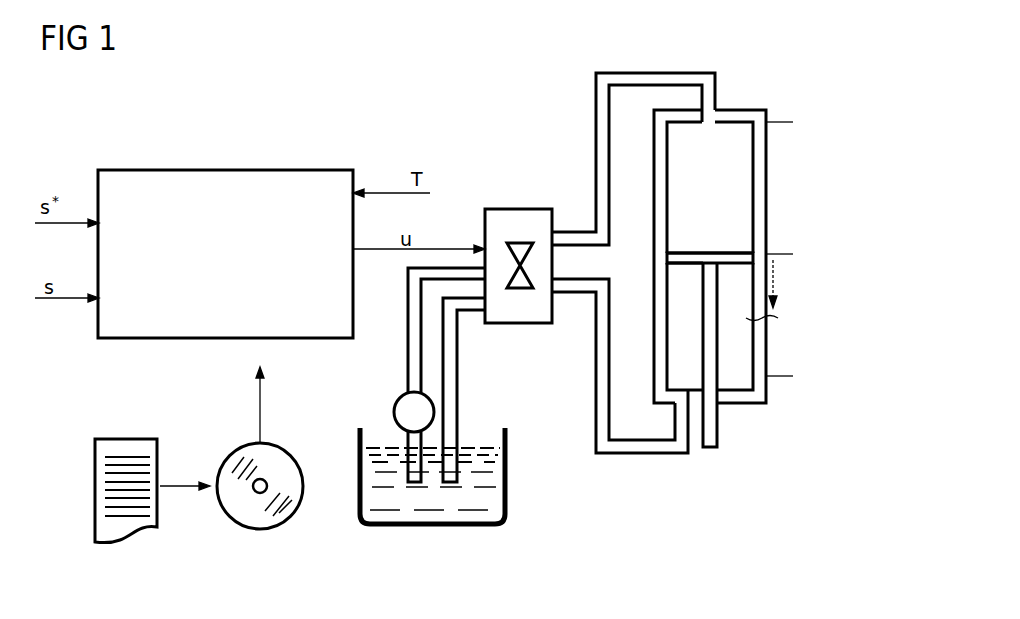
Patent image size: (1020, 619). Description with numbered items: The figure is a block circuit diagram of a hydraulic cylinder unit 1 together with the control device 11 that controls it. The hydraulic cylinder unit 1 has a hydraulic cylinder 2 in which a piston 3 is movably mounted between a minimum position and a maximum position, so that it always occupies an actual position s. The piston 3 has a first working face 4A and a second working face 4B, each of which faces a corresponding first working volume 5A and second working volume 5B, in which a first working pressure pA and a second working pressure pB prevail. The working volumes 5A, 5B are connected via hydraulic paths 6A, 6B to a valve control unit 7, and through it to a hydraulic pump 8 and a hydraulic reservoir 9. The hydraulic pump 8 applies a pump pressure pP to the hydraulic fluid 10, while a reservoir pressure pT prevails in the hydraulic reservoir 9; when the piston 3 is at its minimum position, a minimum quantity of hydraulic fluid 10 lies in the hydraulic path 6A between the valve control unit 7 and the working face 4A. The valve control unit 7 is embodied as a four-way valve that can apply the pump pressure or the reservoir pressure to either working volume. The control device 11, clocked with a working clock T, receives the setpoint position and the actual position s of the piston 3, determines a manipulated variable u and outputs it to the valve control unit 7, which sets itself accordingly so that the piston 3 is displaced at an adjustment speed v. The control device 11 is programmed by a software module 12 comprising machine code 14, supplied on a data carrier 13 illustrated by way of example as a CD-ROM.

The hydraulic cylinder unit 1 is at (572, 60).
The hydraulic cylinder 2 is at (766, 176).
The piston 3 is at (667, 257).
The first working face 4A is at (703, 253).
The second working face 4B is at (690, 264).
The first working volume 5A is at (667, 178).
The second working volume 5B is at (746, 348).
The first hydraulic path 6A is at (596, 128).
The second hydraulic path 6B is at (636, 453).
The valve control unit 7 is at (520, 209).
The hydraulic pump 8 is at (394, 412).
The hydraulic reservoir 9 is at (508, 485).
The hydraulic fluid 10 is at (473, 465).
The control device 11 is at (226, 170).
The software module 12 is at (102, 463).
The data carrier 13 is at (262, 530).
The machine code 14 is at (86, 455).